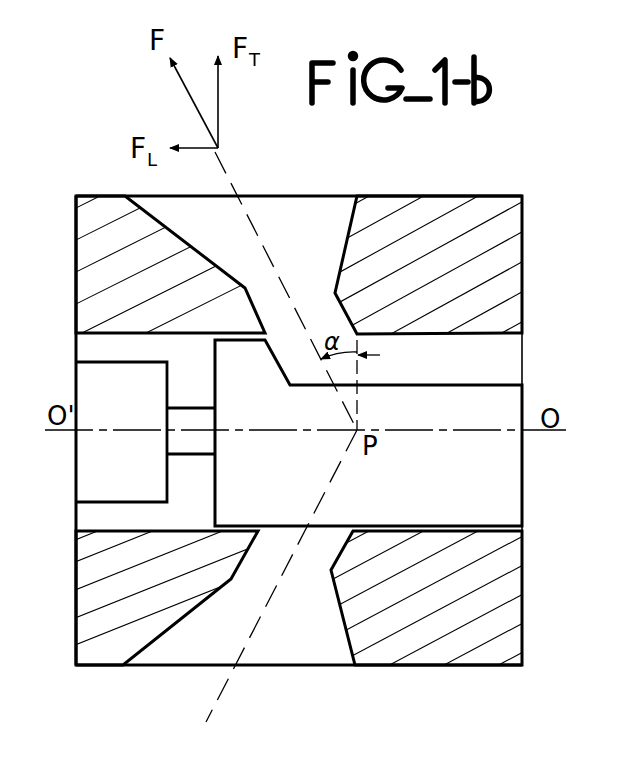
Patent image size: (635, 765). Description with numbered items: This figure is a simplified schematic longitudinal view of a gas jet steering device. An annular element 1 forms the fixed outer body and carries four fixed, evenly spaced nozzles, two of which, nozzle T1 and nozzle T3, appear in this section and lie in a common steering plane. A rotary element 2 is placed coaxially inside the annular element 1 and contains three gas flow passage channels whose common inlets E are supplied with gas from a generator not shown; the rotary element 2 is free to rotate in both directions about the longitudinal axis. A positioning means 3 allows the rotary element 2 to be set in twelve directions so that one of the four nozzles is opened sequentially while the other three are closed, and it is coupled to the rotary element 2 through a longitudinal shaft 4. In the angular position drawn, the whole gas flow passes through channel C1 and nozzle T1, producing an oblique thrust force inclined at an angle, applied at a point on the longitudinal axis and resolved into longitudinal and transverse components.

The annular element 1 is at (462, 221).
The rotary element 2 is at (488, 506).
The positioning means 3 is at (98, 484).
The longitudinal shaft 4 is at (193, 416).
The nozzle T1 is at (318, 217).
The nozzle T3 is at (312, 653).
The gas flow passage channel C1 is at (398, 345).
The common inlets E is at (512, 358).